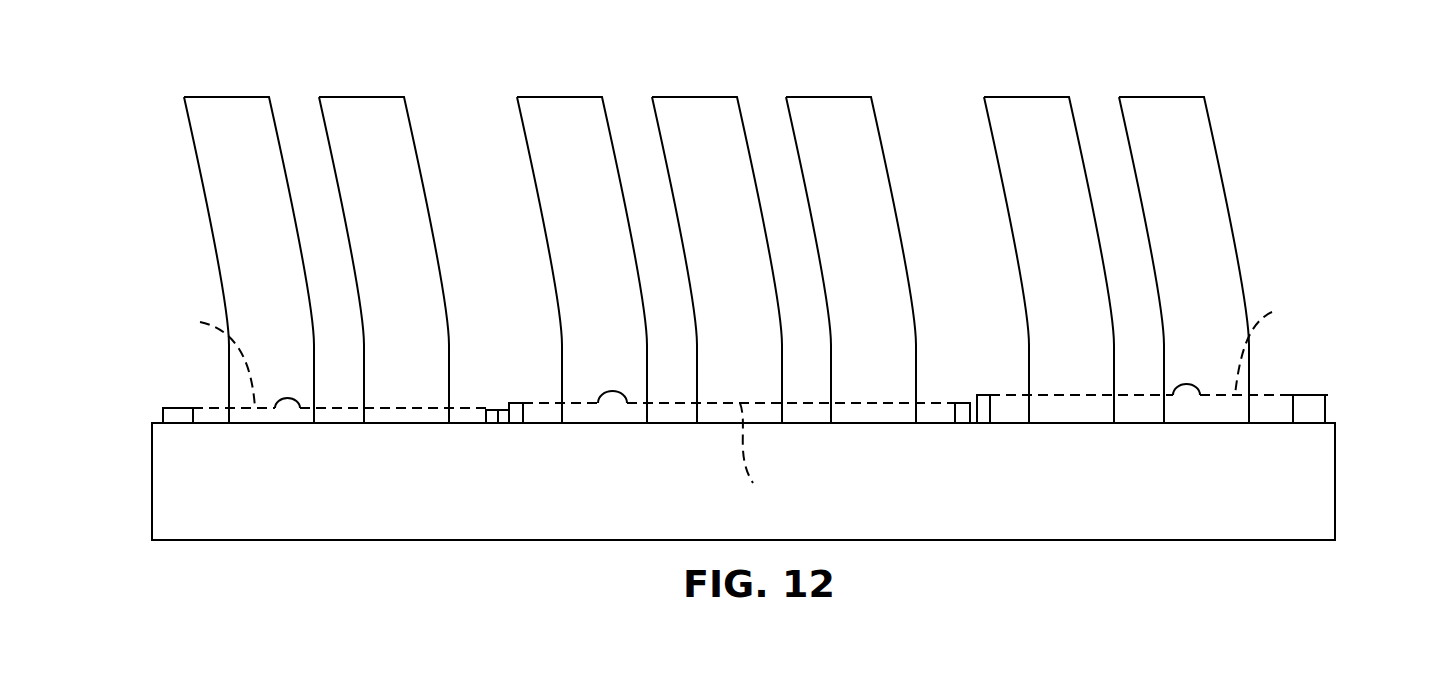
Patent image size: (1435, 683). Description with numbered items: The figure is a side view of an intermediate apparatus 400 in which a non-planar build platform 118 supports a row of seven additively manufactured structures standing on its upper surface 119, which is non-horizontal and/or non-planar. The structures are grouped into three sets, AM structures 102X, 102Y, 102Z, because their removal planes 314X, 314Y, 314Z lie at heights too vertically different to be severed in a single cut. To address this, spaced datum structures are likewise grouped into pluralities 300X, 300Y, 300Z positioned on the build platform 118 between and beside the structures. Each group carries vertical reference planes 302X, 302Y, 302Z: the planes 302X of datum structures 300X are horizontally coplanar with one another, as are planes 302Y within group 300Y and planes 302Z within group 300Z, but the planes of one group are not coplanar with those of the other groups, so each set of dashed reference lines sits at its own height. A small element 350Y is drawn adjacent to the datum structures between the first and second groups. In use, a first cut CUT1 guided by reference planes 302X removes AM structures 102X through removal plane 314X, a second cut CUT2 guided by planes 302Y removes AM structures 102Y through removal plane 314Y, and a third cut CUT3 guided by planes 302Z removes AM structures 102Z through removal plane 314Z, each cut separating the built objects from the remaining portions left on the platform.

The AM structures 102X is at (243, 97).
The AM structures 102Y is at (576, 97).
The AM structures 102Z is at (1043, 97).
The build platform 118 is at (1310, 500).
The upper surface 119 is at (1272, 422).
The plurality of datum structures 300X is at (183, 425).
The plurality of datum structures 300Y is at (962, 415).
The plurality of datum structures 300Z is at (985, 418).
The vertical reference planes 302X is at (172, 408).
The vertical reference planes 302Y is at (517, 403).
The vertical reference planes 302Z is at (987, 395).
The removal plane 314X is at (275, 410).
The removal plane 314Y is at (625, 403).
The removal plane 314Z is at (1175, 395).
The spacer 350Y is at (515, 423).
The intermediate apparatus 400 is at (1285, 195).
The first cut CUT1 is at (194, 357).
The second cut CUT2 is at (778, 453).
The third cut CUT3 is at (1284, 344).